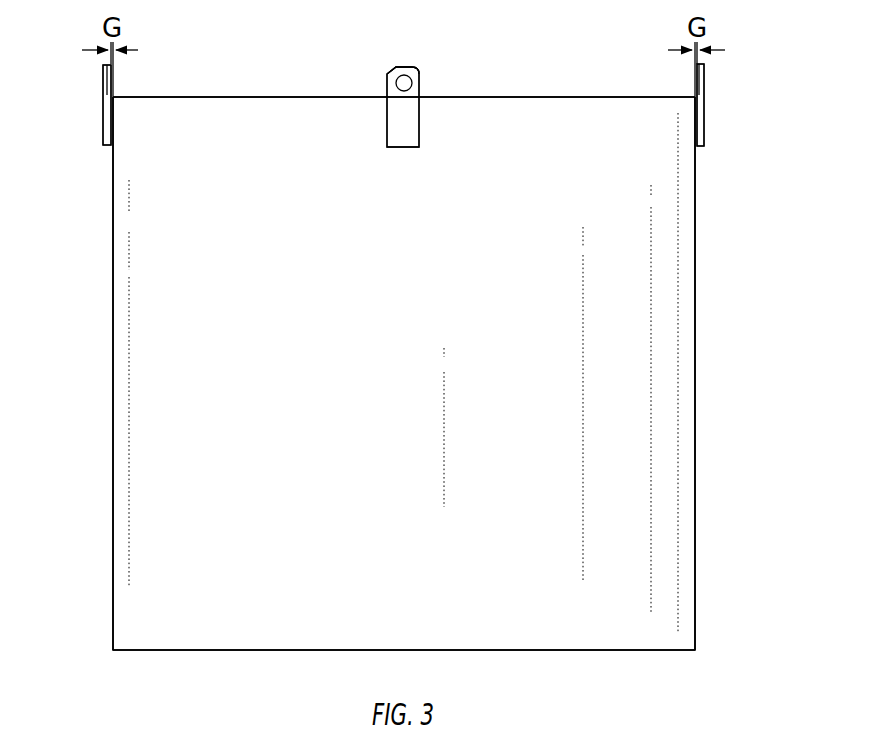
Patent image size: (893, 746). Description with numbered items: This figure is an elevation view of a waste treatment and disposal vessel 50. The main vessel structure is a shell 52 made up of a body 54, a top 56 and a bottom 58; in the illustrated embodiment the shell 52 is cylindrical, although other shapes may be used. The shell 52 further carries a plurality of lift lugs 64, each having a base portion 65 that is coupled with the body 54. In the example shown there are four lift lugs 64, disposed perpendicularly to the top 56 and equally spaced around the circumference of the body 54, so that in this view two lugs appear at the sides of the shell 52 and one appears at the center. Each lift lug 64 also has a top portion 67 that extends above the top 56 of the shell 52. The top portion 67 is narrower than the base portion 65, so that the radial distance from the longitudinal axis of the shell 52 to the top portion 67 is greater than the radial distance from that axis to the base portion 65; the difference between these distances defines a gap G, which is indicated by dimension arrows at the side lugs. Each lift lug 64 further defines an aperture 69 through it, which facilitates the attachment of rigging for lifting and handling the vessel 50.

The vessel 50 is at (86, 67).
The shell 52 is at (688, 397).
The body 54 is at (113, 308).
The top 56 is at (588, 94).
The bottom 58 is at (652, 660).
The lift lug 64 is at (90, 109).
The base portion 65 is at (103, 135).
The top portion 67 is at (420, 93).
The aperture 69 is at (412, 78).